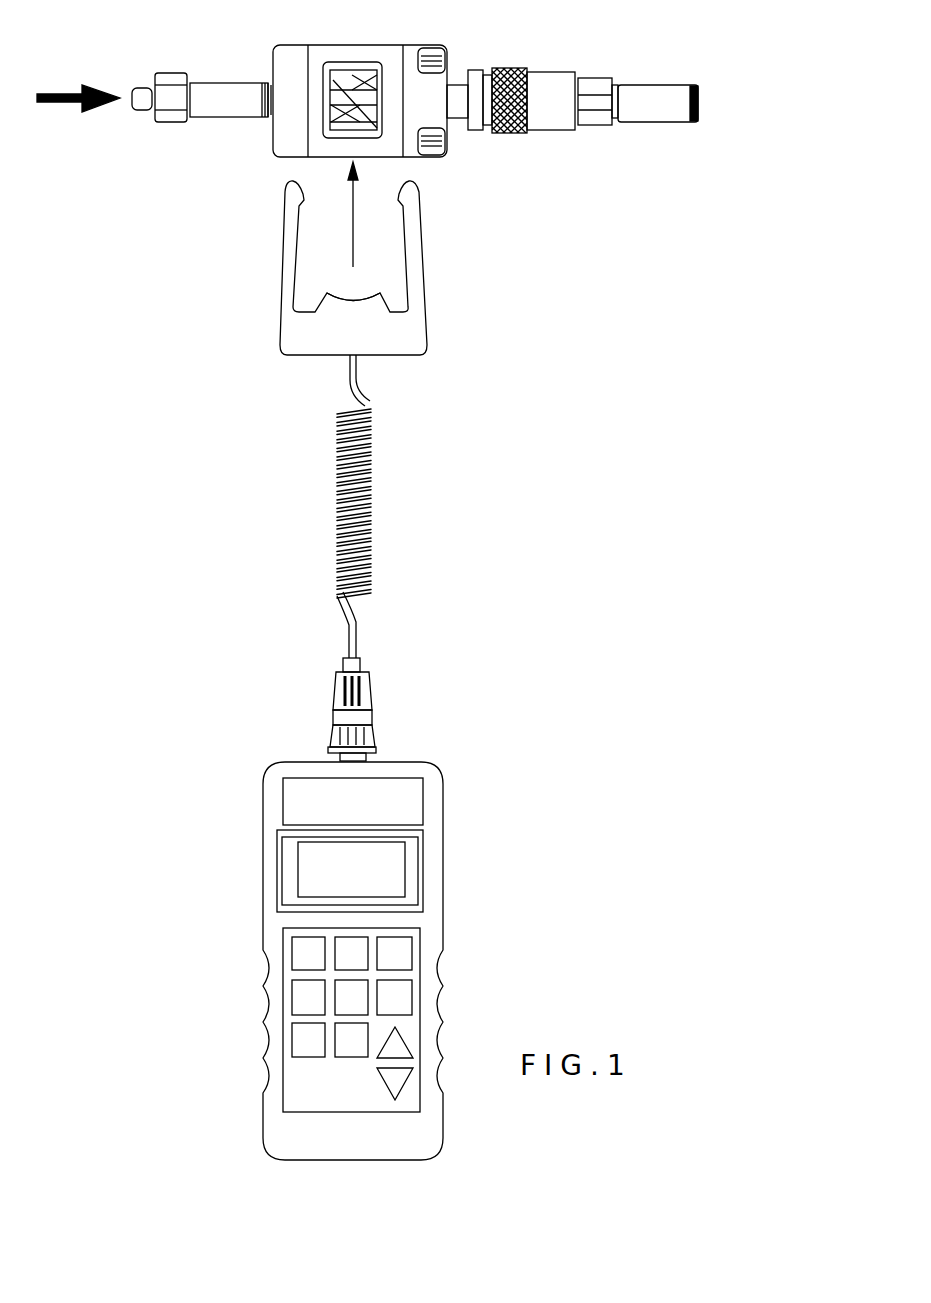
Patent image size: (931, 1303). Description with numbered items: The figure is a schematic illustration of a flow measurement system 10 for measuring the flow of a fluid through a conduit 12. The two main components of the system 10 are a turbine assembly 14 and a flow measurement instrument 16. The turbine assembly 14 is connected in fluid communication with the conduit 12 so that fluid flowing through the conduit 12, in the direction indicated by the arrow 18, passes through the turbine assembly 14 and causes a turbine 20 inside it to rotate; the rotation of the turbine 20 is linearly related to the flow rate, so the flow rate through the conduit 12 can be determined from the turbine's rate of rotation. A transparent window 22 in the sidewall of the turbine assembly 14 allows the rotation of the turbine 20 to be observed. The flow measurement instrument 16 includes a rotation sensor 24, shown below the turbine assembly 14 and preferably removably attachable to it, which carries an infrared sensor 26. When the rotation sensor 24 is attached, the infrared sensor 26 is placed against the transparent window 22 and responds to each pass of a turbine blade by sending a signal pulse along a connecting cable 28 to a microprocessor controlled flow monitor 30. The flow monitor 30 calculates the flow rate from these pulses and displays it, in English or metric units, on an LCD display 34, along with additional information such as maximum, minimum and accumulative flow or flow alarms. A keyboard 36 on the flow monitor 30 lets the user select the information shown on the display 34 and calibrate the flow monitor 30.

The flow measurement system 10 is at (708, 256).
The conduit 12 is at (215, 117).
The turbine assembly 14 is at (388, 45).
The flow measurement instrument 16 is at (397, 473).
The arrow 18 is at (73, 104).
The turbine 20 is at (328, 72).
The transparent window 22 is at (323, 125).
The rotation sensor 24 is at (282, 283).
The infrared sensor 26 is at (353, 302).
The connecting cable 28 is at (335, 488).
The microprocessor controlled flow monitor 30 is at (262, 890).
The LCD display 34 is at (388, 872).
The keyboard 36 is at (372, 1090).